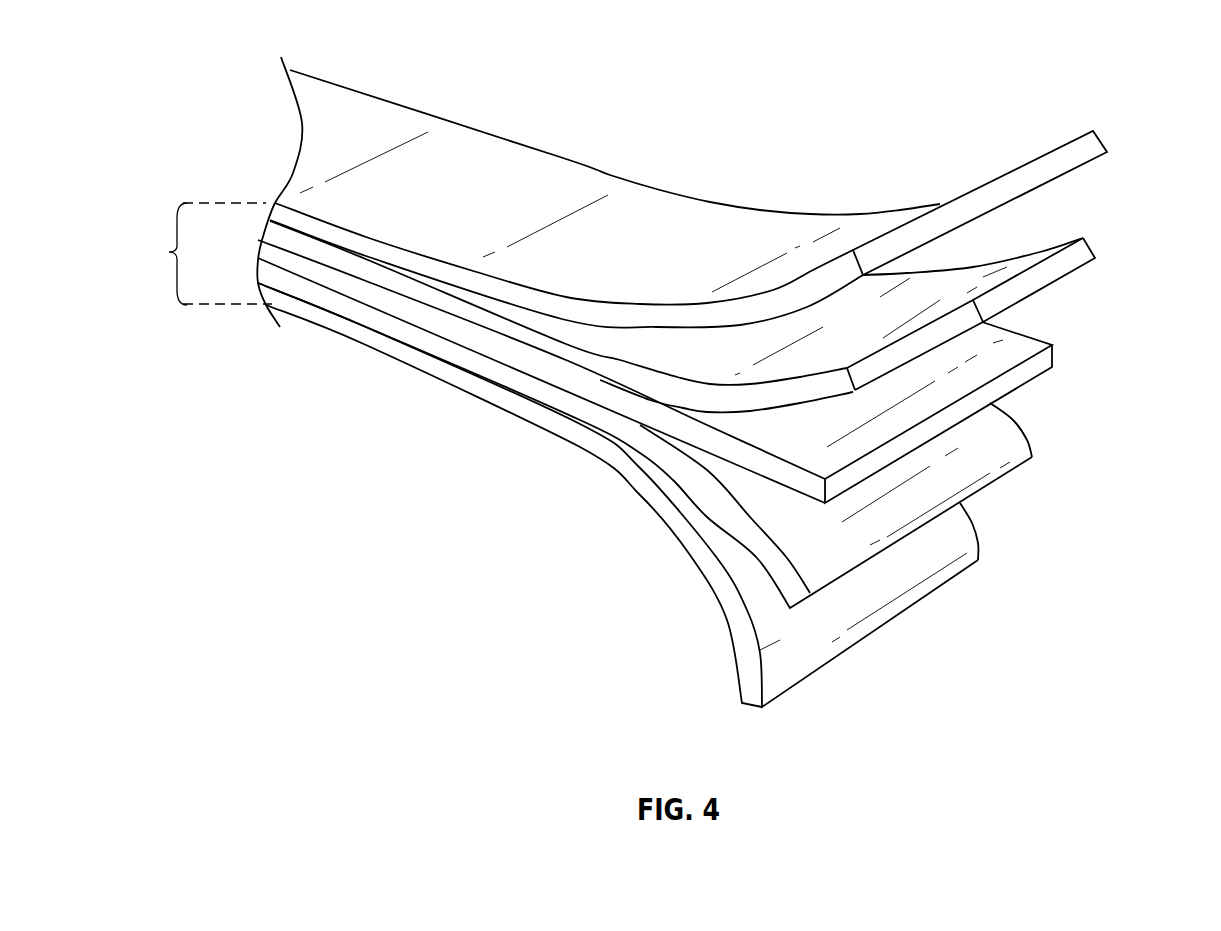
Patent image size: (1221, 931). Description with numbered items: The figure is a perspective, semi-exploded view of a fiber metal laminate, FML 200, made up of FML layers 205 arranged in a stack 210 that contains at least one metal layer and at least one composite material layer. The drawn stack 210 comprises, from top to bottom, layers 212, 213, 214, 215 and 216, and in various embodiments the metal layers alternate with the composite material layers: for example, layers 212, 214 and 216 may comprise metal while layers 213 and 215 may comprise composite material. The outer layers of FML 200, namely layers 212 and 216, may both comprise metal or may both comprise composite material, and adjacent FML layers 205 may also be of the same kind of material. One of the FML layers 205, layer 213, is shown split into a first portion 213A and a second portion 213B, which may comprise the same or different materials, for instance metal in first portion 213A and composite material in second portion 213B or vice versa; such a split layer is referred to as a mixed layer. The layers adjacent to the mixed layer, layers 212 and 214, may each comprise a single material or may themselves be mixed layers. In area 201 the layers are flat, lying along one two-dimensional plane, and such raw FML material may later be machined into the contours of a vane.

The fiber metal laminate 200 is at (610, 101).
The area 201 is at (360, 78).
The FML layers 205 is at (656, 560).
The stack 210 is at (195, 254).
The layer 212 is at (1103, 143).
The layer 213 is at (1092, 250).
The first portion 213A is at (933, 333).
The second portion 213B is at (1048, 275).
The layer 214 is at (1053, 355).
The layer 215 is at (995, 477).
The layer 216 is at (748, 682).